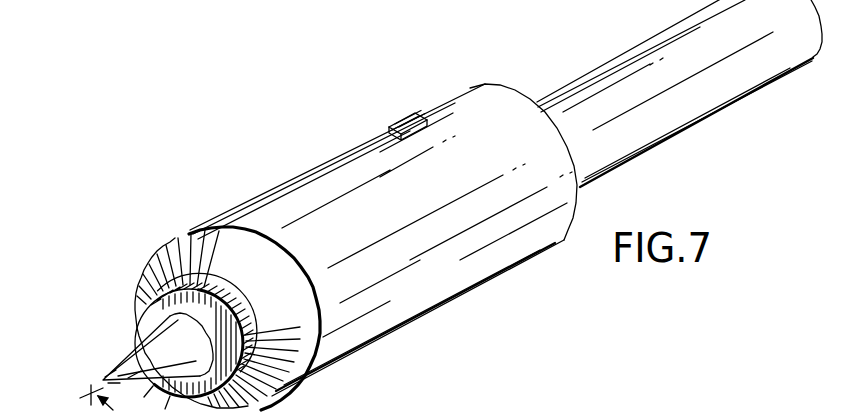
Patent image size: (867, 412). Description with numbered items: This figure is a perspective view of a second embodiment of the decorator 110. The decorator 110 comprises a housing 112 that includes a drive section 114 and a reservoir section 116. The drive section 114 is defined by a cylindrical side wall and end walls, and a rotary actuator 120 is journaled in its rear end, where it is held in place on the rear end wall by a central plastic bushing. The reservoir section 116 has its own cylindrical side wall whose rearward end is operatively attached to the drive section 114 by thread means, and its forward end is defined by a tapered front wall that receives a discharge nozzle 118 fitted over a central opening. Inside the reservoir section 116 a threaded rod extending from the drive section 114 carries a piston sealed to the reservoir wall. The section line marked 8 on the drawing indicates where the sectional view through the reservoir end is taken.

The decorator 110 is at (420, 62).
The housing 112 is at (347, 138).
The drive section 114 is at (492, 284).
The reservoir section 116 is at (333, 367).
The discharge nozzle 118 is at (131, 354).
The rotary actuator 120 is at (662, 33).
The section view indicator 8 is at (96, 381).